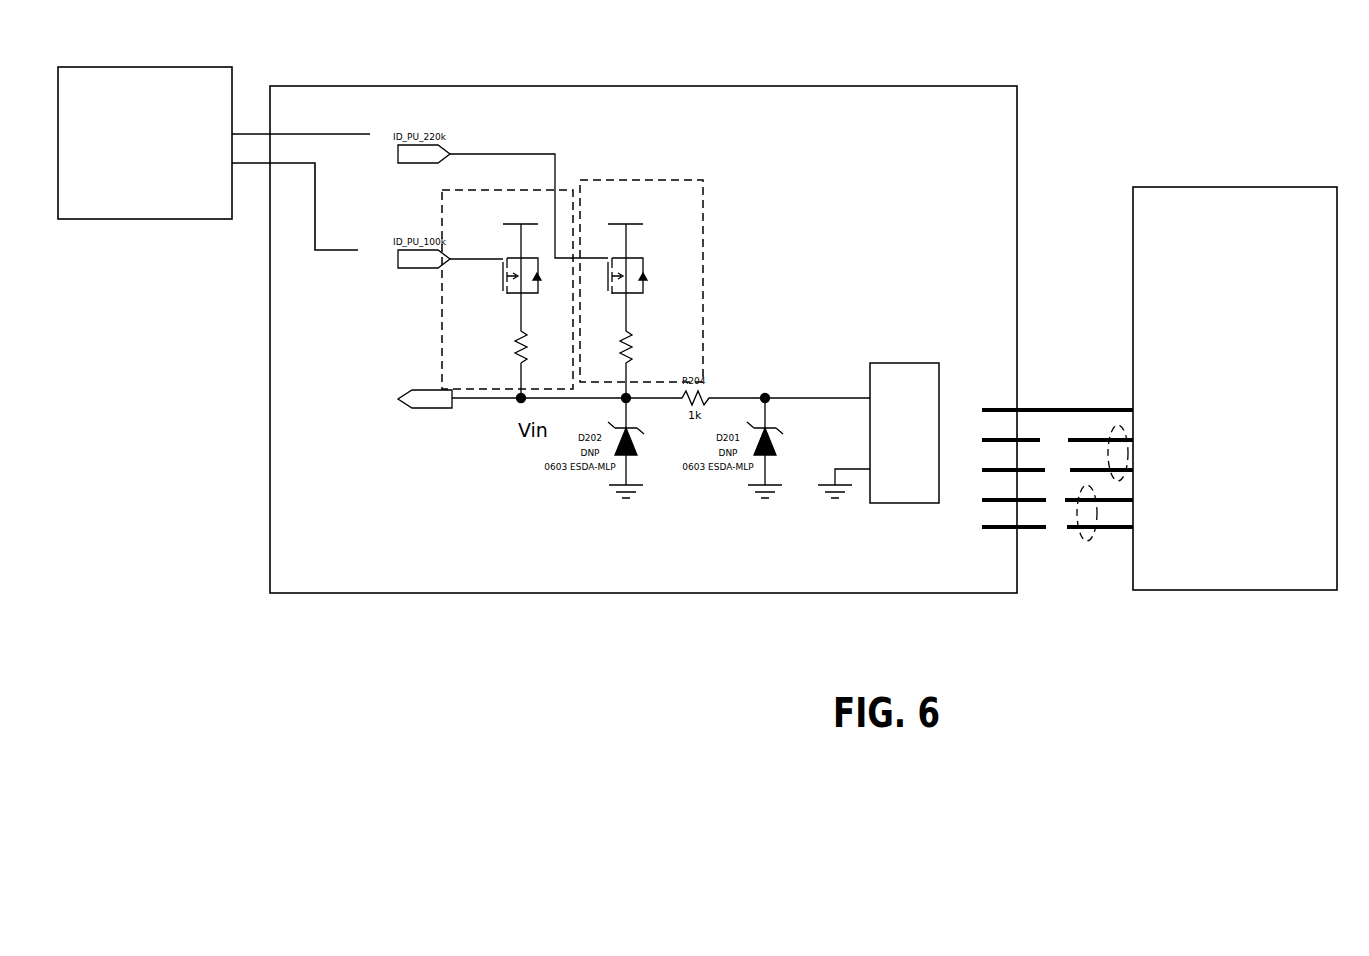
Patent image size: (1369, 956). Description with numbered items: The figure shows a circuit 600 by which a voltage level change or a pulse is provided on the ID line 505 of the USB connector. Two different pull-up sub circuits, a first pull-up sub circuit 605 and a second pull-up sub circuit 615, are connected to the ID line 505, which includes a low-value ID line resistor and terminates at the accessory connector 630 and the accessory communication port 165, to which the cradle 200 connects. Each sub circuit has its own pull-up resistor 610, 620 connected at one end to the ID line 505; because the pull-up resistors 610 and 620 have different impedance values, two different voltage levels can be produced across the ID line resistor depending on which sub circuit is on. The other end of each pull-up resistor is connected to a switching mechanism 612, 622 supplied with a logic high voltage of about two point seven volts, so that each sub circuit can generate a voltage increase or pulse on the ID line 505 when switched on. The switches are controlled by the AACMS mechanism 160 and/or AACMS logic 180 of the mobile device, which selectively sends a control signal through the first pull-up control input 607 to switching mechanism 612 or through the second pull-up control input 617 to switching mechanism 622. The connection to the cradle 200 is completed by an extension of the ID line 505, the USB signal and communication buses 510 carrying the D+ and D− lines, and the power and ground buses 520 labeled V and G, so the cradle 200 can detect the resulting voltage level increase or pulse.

The AACMS mechanism 160 is at (103, 167).
The AACMS logic 180 is at (145, 143).
The circuit 600 is at (993, 116).
The second pull-up control input 617 is at (292, 134).
The first pull-up control input 607 is at (315, 217).
The first pull-up sub circuit 605 is at (458, 190).
The second pull-up sub circuit 615 is at (680, 180).
The pull-up resistor 610 is at (495, 379).
The pull-up resistor 620 is at (619, 379).
The switching mechanism 612 is at (563, 287).
The switching mechanism 622 is at (665, 287).
The accessory connector 630 is at (380, 420).
The ID line 505 is at (815, 410).
The accessory communication port 165 is at (962, 461).
The signal and communication buses 510 is at (1122, 483).
The power and ground buses 520 is at (1088, 538).
The cradle 200 is at (1215, 420).